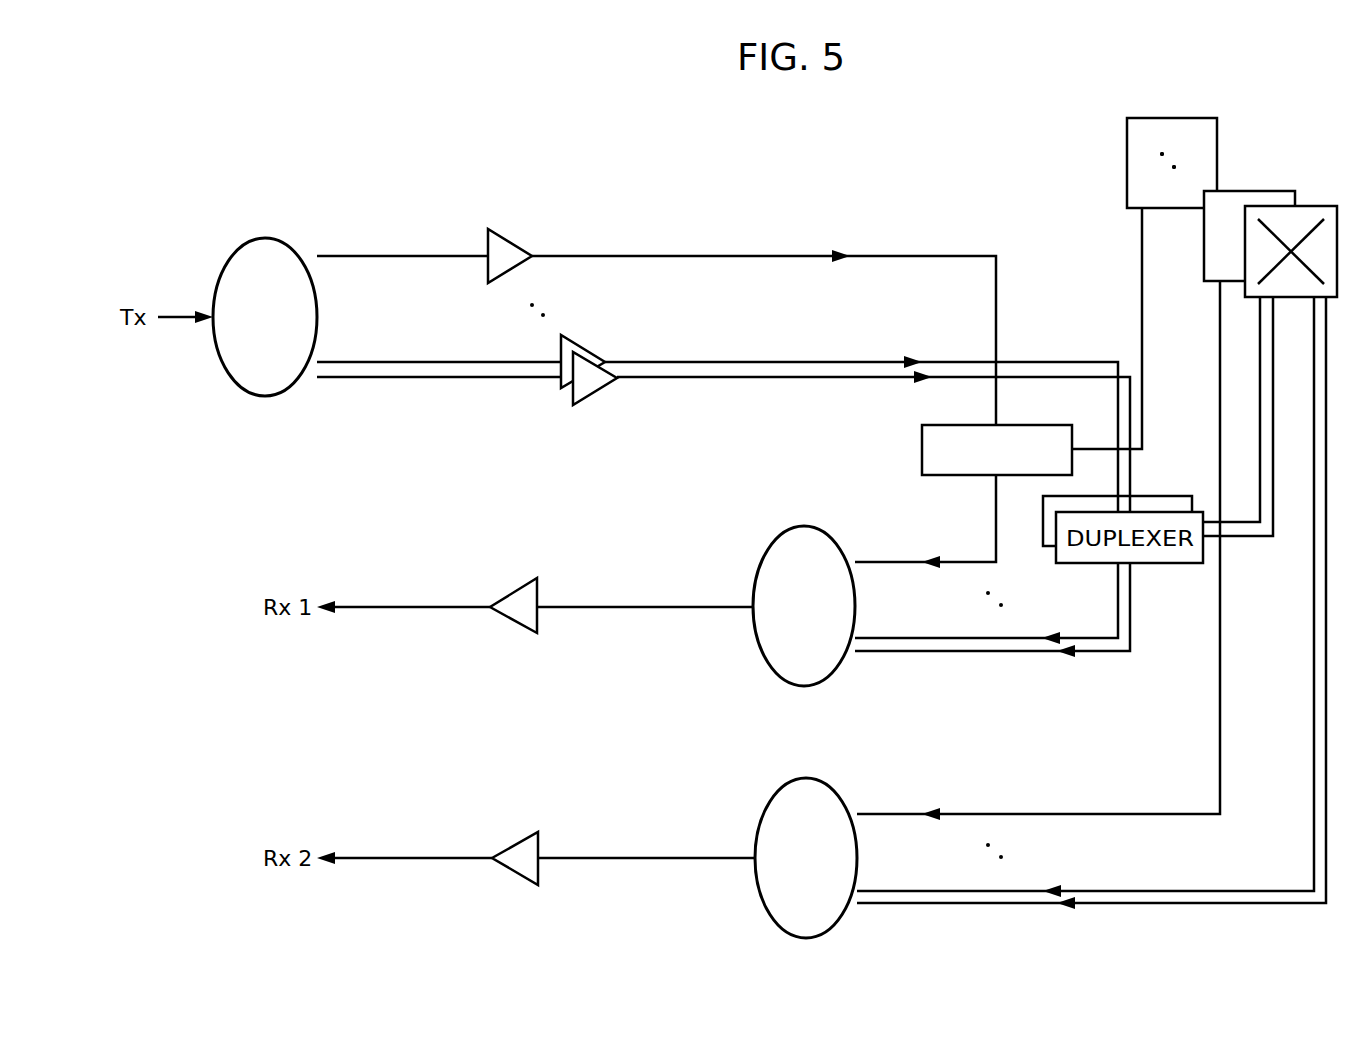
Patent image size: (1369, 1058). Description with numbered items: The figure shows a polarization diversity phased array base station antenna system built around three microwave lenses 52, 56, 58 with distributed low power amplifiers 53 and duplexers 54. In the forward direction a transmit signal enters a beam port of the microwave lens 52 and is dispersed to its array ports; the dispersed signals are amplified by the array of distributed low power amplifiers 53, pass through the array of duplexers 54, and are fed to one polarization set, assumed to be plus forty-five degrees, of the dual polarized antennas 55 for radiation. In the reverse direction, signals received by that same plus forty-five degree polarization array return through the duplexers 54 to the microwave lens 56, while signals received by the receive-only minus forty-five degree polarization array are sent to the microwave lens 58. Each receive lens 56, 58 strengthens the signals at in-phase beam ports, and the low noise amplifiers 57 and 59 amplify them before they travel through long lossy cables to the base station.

The microwave lens 52 is at (265, 237).
The distributed low power amplifiers 53 is at (515, 243).
The duplexers 54 is at (1022, 425).
The dual polarized antennas 55 is at (1168, 118).
The microwave lens 56 is at (806, 526).
The low noise amplifier 57 is at (516, 620).
The microwave lens 58 is at (808, 778).
The low noise amplifier 59 is at (518, 870).